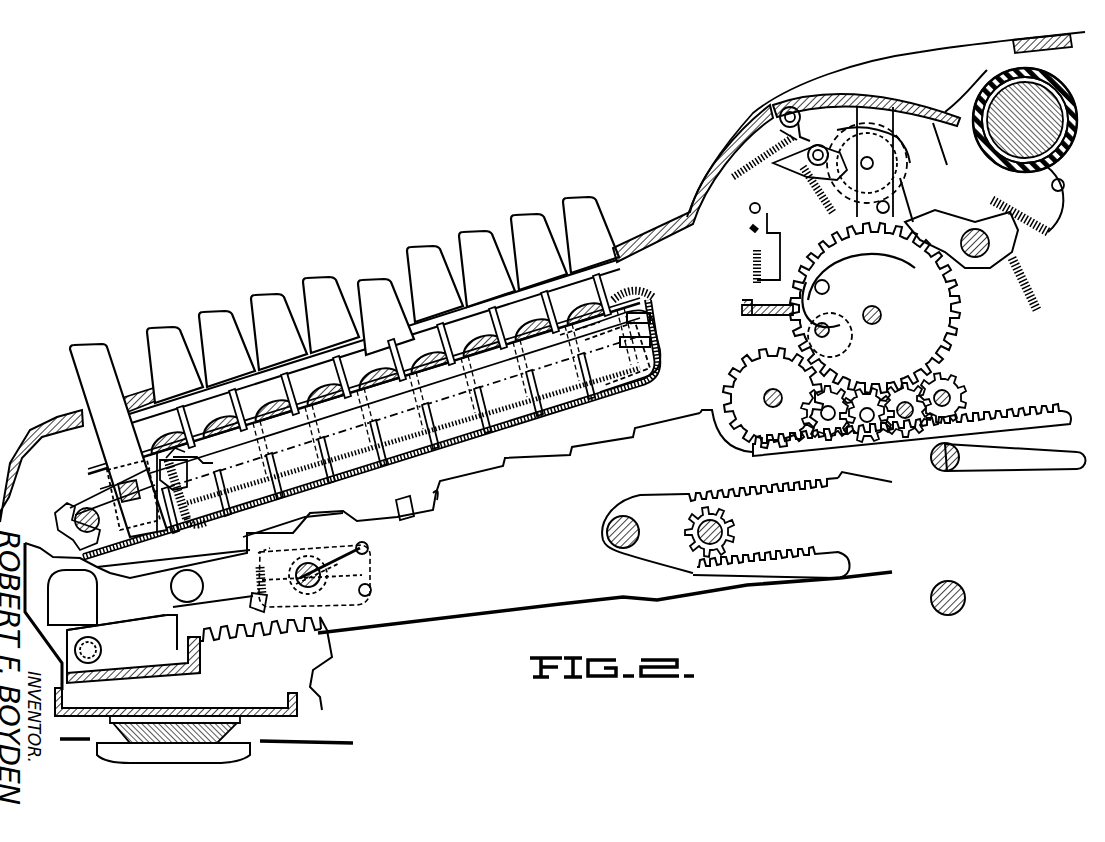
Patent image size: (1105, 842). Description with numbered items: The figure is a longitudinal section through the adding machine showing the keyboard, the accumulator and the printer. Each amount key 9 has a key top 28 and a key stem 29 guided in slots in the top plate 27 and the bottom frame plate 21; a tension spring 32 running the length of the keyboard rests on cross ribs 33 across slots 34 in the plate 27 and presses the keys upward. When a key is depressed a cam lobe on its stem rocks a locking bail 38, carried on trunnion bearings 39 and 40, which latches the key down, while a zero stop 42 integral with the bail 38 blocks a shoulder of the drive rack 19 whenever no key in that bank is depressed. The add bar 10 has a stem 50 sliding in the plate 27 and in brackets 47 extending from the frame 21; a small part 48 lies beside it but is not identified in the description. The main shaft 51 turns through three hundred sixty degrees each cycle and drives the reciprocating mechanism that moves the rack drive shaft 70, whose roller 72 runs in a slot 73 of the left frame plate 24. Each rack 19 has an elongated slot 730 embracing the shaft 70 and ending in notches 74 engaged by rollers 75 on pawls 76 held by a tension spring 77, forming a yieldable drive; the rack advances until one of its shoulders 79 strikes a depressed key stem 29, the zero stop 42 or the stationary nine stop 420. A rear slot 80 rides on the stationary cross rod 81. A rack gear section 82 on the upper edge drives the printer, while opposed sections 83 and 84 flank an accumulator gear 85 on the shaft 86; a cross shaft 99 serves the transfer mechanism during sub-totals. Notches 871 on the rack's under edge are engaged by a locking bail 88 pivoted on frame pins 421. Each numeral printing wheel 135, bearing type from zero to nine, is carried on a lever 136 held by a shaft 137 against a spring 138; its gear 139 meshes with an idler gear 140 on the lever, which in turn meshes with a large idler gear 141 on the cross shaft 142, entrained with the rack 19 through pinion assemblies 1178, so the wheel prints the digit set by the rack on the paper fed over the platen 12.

The amount key 9 is at (518, 222).
The add bar 10 is at (88, 352).
The platen 12 is at (1066, 90).
The drive rack 19 is at (518, 578).
The bottom frame plate 21 is at (490, 438).
The left hand machine frame plate 24 is at (325, 665).
The top plate 27 is at (96, 470).
The key top 28 is at (600, 237).
The key stem 29 is at (608, 296).
The tension spring 32 is at (528, 333).
The cross ribs 33 is at (575, 326).
The slots 34 is at (598, 325).
The locking bail 38 is at (656, 340).
The trunnion bearing 39 is at (655, 316).
The trunnion bearing 40 is at (200, 460).
The zero stop 42 is at (408, 495).
The brackets 47 is at (100, 568).
The link 48 is at (183, 488).
The stem 50 is at (100, 450).
The main shaft 51 is at (955, 582).
The rack drive shaft 70 is at (316, 590).
The roller 72 is at (300, 552).
The slot 73 is at (148, 613).
The notches 74 is at (368, 542).
The rollers 75 is at (372, 556).
The drive pawls 76 is at (360, 572).
The tension spring 77 is at (252, 602).
The shoulders 79 is at (462, 490).
The slot 80 is at (1033, 455).
The cross rod 81 is at (962, 452).
The rack gear section 82 is at (1050, 406).
The rack gear section 83 is at (832, 498).
The rack gear section 84 is at (832, 545).
The accumulator gear 85 is at (735, 522).
The shaft 86 is at (738, 541).
The locking bail 88 is at (205, 675).
The cross shaft 99 is at (634, 515).
The numeral printing wheel 135 is at (890, 118).
The lever 136 is at (915, 216).
The shaft 137 is at (972, 262).
The spring 138 is at (1030, 282).
The gear 139 is at (905, 176).
The idler gear 140 is at (905, 190).
The large idler gear 141 is at (950, 325).
The cross shaft 142 is at (882, 316).
The nine stop 420 is at (206, 520).
The frame pins 421 is at (102, 650).
The elongated slot 730 is at (256, 580).
The notches 871 is at (276, 638).
The pinion 1178 is at (963, 390).